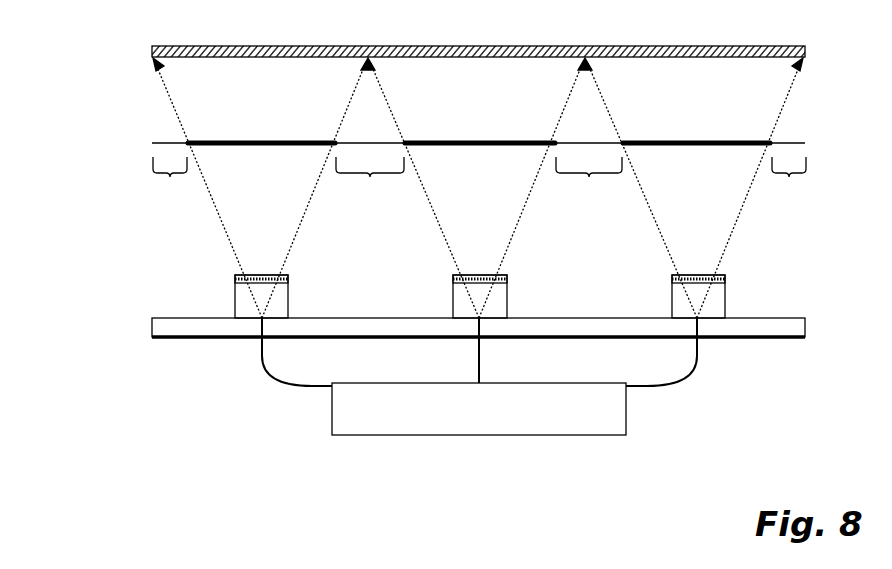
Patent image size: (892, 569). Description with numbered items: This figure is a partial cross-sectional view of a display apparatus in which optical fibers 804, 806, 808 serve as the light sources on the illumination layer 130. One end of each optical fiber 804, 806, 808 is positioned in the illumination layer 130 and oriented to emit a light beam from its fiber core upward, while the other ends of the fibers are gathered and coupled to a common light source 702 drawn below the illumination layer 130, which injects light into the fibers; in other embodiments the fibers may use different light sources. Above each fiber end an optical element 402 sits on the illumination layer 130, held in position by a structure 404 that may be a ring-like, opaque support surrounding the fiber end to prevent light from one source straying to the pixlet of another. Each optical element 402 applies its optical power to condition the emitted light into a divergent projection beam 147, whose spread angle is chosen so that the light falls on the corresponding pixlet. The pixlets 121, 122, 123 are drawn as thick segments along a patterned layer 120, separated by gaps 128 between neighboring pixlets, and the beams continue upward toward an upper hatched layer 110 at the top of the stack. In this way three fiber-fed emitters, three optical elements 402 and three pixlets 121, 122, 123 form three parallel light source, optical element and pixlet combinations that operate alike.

The reflector 110 is at (112, 50).
The patterned layer 120 is at (112, 143).
The pixlet 121 is at (269, 140).
The second opaque region 122 is at (483, 140).
The third opaque region 123 is at (698, 140).
The transparent gap 128 is at (479, 193).
The illumination layer 130 is at (112, 325).
The divergent projection beam 147 is at (218, 208).
The optical element 402 is at (235, 278).
The structure 404 is at (288, 309).
The light source 702 is at (479, 409).
The optical fiber 804 is at (262, 358).
The optical fiber 806 is at (483, 350).
The optical fiber 808 is at (680, 372).